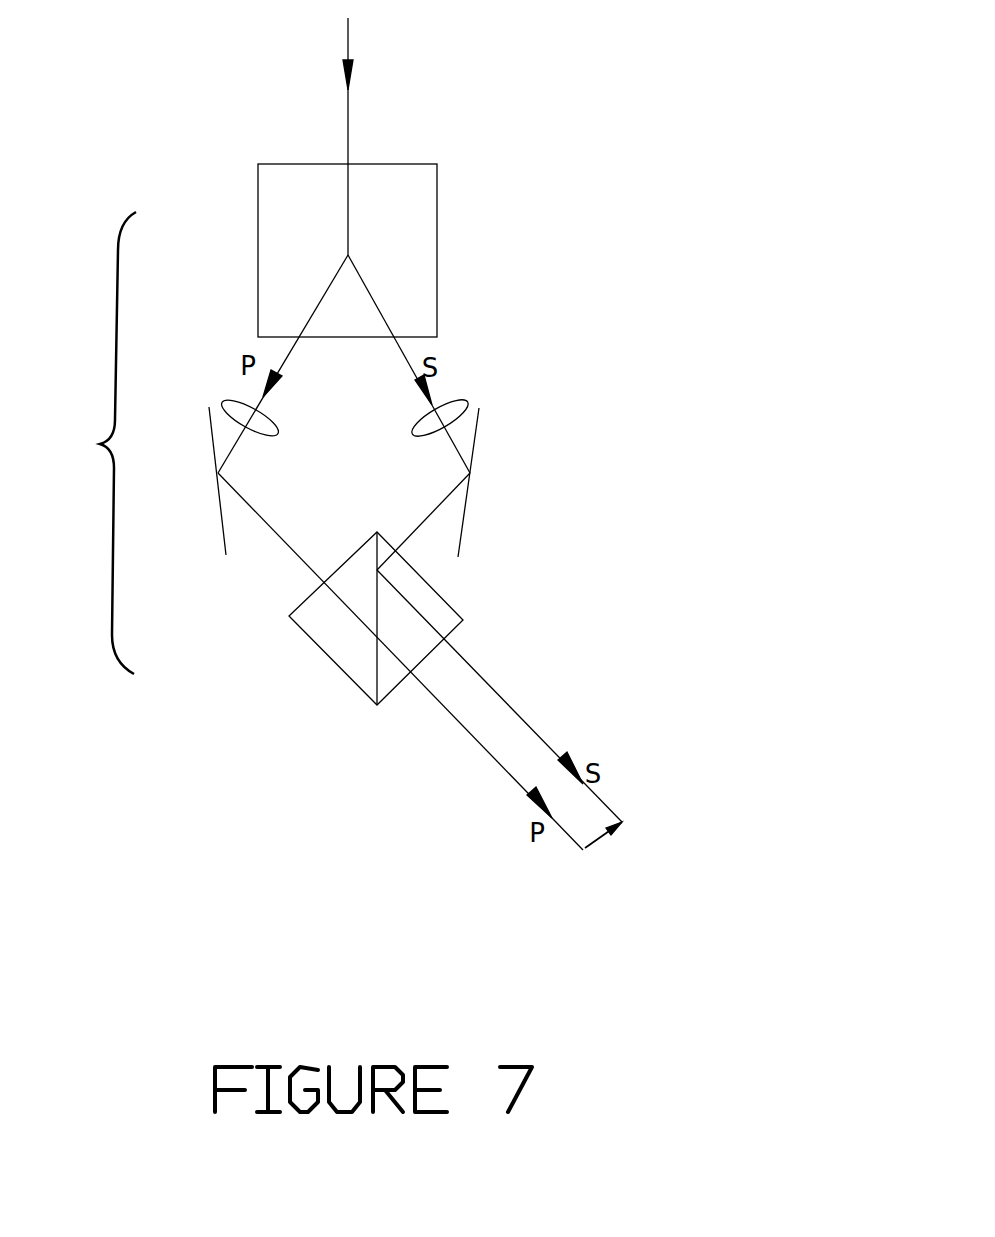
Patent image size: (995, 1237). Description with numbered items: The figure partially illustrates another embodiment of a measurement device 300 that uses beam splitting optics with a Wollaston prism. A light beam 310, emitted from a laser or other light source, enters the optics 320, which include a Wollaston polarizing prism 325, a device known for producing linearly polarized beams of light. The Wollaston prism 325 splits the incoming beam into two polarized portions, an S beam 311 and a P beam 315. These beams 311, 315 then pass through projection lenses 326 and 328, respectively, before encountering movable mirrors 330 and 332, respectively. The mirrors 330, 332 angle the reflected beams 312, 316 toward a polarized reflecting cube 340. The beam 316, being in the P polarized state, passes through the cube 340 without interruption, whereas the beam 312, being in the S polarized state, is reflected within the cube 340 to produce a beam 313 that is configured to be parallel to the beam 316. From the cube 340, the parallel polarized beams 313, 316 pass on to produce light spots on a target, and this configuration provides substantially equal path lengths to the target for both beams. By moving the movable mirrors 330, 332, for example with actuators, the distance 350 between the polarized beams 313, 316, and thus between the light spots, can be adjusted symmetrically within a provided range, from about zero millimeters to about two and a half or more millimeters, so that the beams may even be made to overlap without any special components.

The measurement device 300 is at (632, 112).
The light beam 310 is at (345, 38).
The Wollaston polarizing prism 325 is at (410, 164).
The P polarized beam portion 315 is at (317, 302).
The S polarized beam portion 311 is at (372, 297).
The projection lens 328 is at (237, 400).
The movable mirror 332 is at (208, 420).
The projection lens 326 is at (460, 398).
The movable mirror 330 is at (477, 420).
The reflected beam 316 is at (272, 527).
The reflected beam 312 is at (430, 512).
The polarized reflecting cube 340 is at (442, 598).
The beam 313 is at (480, 677).
The distance 350 is at (585, 853).
The optics 320 is at (100, 444).